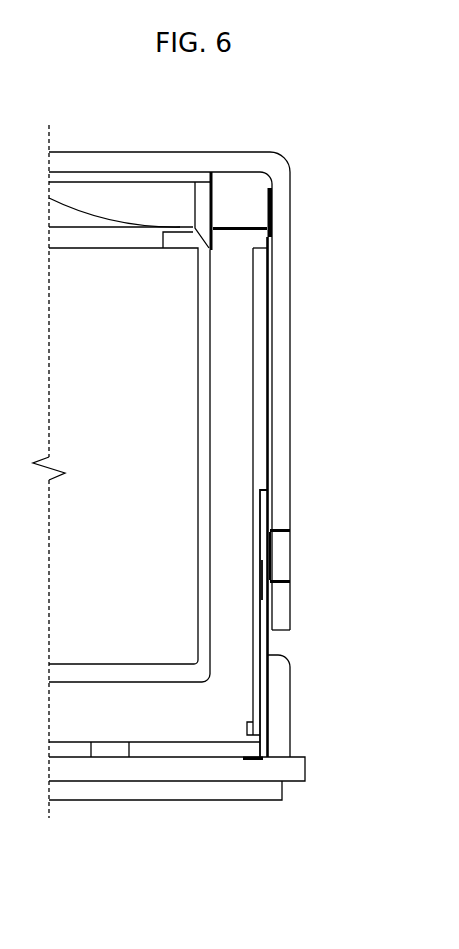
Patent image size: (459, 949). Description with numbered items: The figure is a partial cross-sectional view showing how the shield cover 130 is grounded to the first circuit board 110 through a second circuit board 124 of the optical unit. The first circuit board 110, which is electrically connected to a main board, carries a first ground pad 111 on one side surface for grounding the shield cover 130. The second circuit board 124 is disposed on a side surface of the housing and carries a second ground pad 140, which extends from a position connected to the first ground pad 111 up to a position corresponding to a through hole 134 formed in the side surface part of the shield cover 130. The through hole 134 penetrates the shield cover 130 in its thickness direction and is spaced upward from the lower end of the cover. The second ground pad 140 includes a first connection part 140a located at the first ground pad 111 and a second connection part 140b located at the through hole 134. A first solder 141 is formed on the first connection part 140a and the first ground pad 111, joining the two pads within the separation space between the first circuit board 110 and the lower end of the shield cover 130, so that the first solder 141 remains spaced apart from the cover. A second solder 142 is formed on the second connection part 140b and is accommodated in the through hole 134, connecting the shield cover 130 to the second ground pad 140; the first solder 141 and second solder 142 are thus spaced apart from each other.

The first circuit board 110 is at (297, 779).
The first ground pad 111 is at (278, 762).
The second circuit board 124 is at (273, 345).
The shield cover 130 is at (287, 220).
The through hole 134 is at (283, 525).
The second ground pad 140 is at (268, 645).
The first connection part 140a is at (267, 718).
The second connection part 140b is at (266, 563).
The first solder 141 is at (290, 690).
The second solder 142 is at (283, 553).